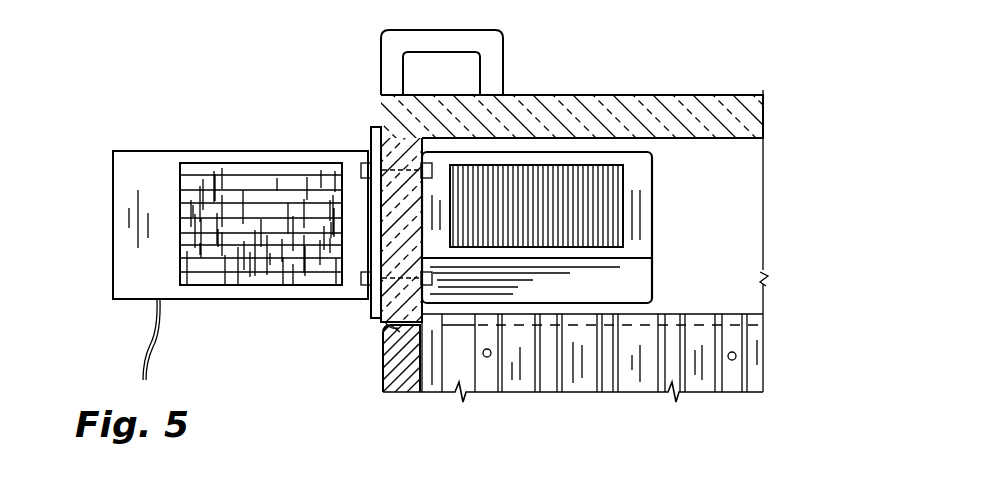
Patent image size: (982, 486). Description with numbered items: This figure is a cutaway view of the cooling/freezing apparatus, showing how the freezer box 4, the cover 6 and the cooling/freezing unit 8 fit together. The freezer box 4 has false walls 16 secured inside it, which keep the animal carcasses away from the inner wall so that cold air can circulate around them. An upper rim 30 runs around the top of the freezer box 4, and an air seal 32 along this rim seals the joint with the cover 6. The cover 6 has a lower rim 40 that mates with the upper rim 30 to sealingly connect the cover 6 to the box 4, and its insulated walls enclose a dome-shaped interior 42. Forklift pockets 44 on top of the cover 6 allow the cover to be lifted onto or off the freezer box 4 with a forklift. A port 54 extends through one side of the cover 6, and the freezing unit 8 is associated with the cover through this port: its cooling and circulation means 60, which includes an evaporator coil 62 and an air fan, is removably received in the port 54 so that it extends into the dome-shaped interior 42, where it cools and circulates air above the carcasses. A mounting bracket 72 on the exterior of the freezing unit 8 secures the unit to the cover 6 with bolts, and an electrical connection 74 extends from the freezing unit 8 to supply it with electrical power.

The freezer box 4 is at (410, 373).
The cover 6 is at (663, 117).
The cooling/freezing unit 8 is at (152, 160).
The false walls 16 is at (573, 345).
The upper rim 30 is at (390, 343).
The air seal 32 is at (377, 321).
The lower rim 40 is at (403, 330).
The dome-shaped interior 42 is at (748, 210).
The forklift pockets 44 is at (490, 52).
The port 54 is at (380, 157).
The cooling and circulation means 60 is at (640, 240).
The evaporator coil 62 is at (597, 192).
The mounting bracket 72 is at (372, 198).
The electrical connection 74 is at (150, 338).